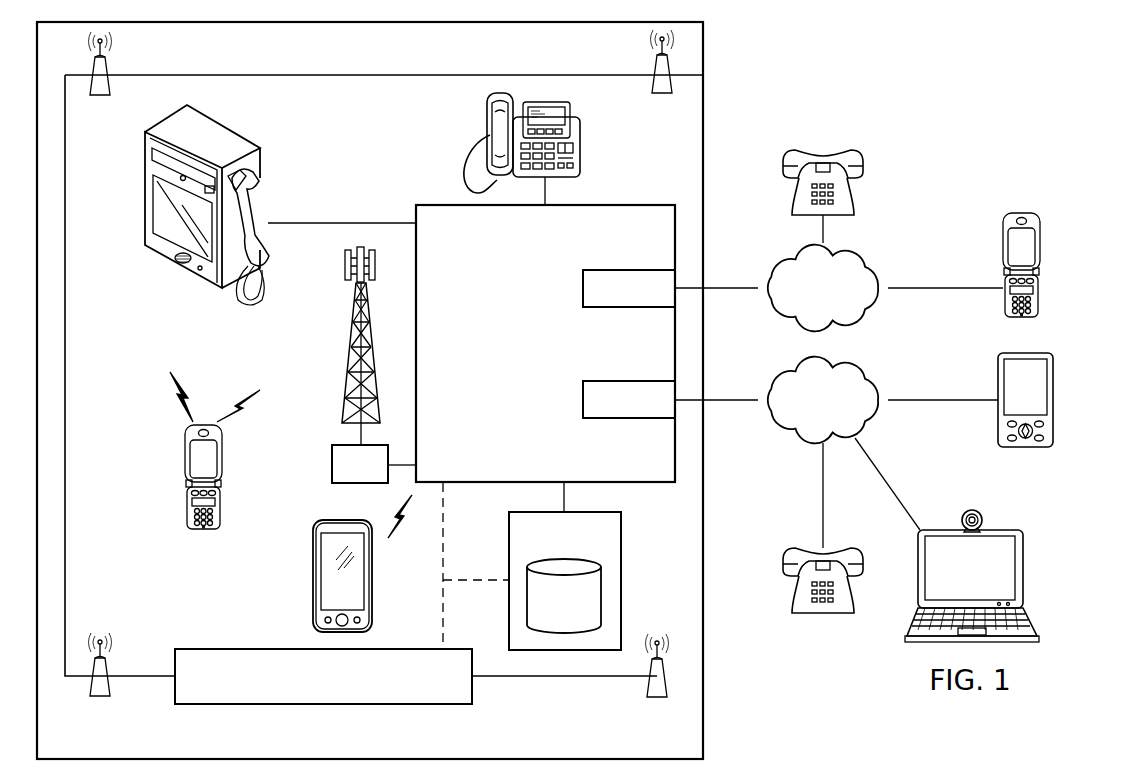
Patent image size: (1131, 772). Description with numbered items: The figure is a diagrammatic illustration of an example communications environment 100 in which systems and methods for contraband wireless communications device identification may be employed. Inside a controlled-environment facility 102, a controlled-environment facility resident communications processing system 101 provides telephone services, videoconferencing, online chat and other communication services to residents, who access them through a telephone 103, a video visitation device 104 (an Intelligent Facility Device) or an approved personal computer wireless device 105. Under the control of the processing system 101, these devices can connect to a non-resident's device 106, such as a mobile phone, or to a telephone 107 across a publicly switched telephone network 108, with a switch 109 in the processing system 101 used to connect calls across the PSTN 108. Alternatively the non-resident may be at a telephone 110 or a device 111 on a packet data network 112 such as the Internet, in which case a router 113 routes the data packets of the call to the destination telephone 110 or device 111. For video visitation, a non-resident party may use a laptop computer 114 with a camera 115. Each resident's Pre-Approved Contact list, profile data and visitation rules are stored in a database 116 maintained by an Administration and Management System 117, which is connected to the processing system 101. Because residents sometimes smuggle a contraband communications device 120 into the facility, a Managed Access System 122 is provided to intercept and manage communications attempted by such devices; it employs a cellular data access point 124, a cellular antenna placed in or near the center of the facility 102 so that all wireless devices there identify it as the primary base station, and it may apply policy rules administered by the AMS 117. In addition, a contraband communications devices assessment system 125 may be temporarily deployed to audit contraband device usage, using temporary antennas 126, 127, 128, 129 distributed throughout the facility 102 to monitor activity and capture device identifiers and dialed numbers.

The communications environment 100 is at (960, 70).
The controlled-environment facility resident communications processing system 101 is at (482, 444).
The controlled-environment facility 102 is at (704, 68).
The telephone 103 is at (582, 142).
The video visitation device 104 is at (145, 162).
The personal computer wireless device 105 is at (313, 575).
The non-resident device 106 is at (1040, 242).
The telephone 107 is at (833, 150).
The publicly switched telephone network 108 is at (770, 262).
The switch 109 is at (630, 269).
The telephone 110 is at (823, 613).
The device 111 is at (1053, 418).
The packet data network 112 is at (876, 370).
The router 113 is at (630, 419).
The laptop computer 114 is at (996, 570).
The camera 115 is at (984, 519).
The database 116 is at (546, 619).
The Administration and Management System 117 is at (596, 566).
The contraband communications device 120 is at (185, 495).
The Managed Access System 122 is at (332, 475).
The cellular data access point 124 is at (342, 400).
The contraband communications devices assessment system 125 is at (325, 705).
The temporary antenna 126 is at (657, 700).
The temporary antenna 127 is at (100, 700).
The temporary antenna 128 is at (108, 65).
The temporary antenna 129 is at (660, 95).